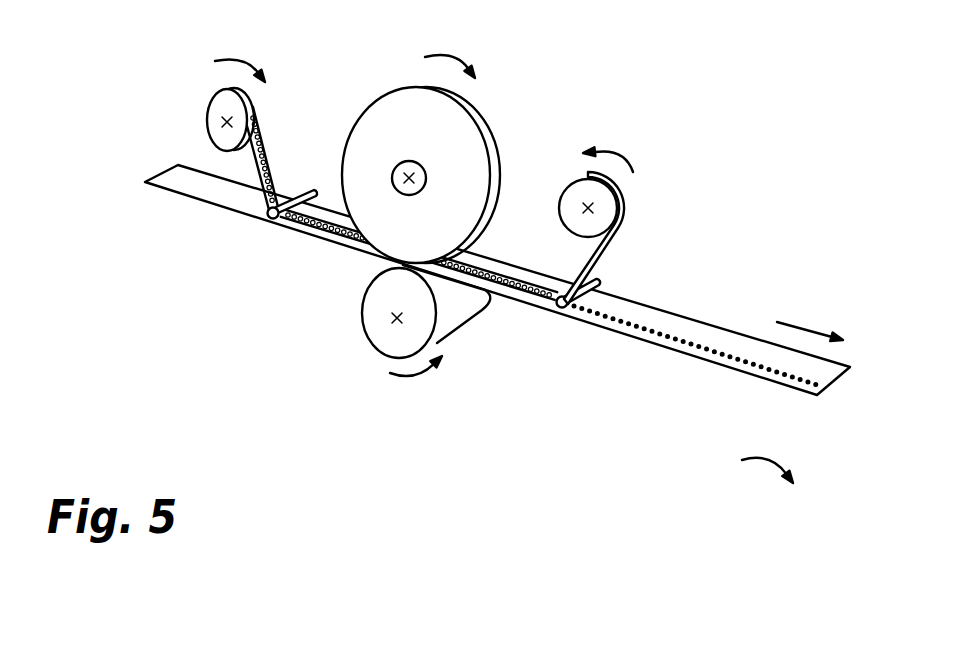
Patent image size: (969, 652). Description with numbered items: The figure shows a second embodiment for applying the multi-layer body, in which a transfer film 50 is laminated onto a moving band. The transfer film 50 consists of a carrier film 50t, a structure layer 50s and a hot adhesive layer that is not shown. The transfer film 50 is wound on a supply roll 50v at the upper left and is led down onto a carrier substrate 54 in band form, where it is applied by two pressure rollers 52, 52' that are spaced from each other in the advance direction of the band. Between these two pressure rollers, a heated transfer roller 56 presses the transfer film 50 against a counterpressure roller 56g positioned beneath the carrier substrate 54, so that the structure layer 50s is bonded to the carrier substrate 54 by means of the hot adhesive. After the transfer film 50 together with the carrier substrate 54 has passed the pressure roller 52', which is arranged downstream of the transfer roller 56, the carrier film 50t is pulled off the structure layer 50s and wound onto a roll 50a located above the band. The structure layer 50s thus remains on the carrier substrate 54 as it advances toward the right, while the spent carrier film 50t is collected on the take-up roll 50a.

The transfer film 50 is at (255, 110).
The supply roll 50v is at (208, 117).
The roll 50a is at (598, 200).
The carrier film 50t is at (607, 253).
The structure layer 50s is at (658, 344).
The pressure roller 52 is at (277, 247).
The pressure roller 52' is at (580, 337).
The carrier substrate 54 is at (193, 187).
The heated transfer roller 56 is at (453, 147).
The counterpressure roller 56g is at (399, 333).